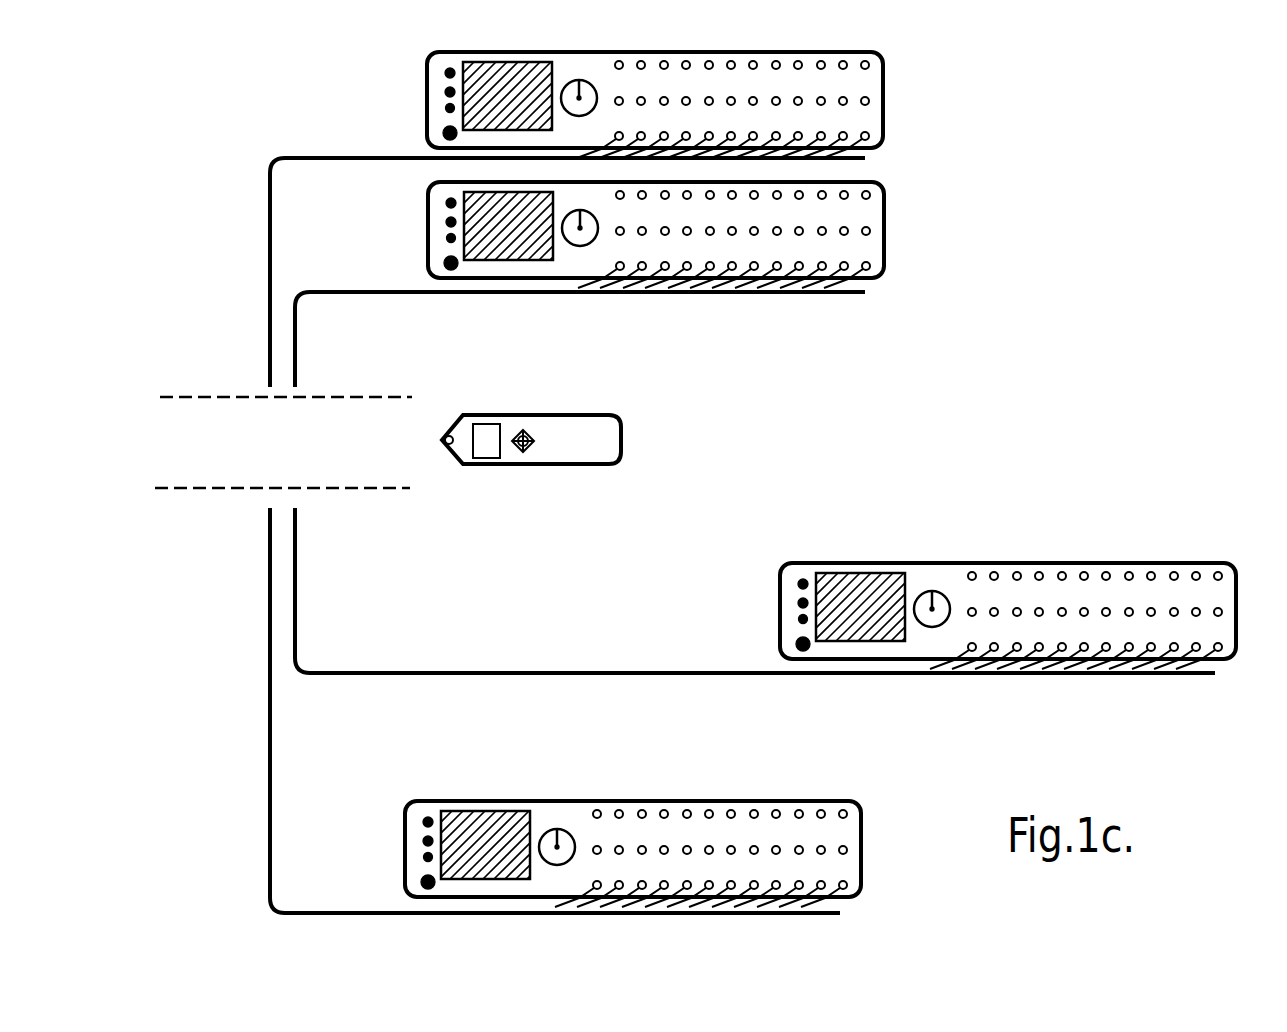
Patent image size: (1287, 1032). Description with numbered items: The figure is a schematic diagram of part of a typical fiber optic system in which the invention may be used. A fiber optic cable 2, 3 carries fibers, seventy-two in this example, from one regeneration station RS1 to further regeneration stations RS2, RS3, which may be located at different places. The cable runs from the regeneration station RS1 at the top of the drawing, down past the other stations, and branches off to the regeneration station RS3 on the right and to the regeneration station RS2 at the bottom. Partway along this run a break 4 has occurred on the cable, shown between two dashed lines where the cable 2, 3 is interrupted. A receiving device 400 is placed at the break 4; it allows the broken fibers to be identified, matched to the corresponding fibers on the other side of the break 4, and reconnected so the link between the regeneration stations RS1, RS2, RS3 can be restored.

The fiber optic cable 2 is at (270, 362).
The fiber optic cable 3 is at (270, 545).
The break 4 is at (282, 448).
The regeneration station RS1 is at (884, 215).
The regeneration station RS2 is at (612, 801).
The regeneration station RS3 is at (1010, 563).
The receiving device 400 is at (621, 452).